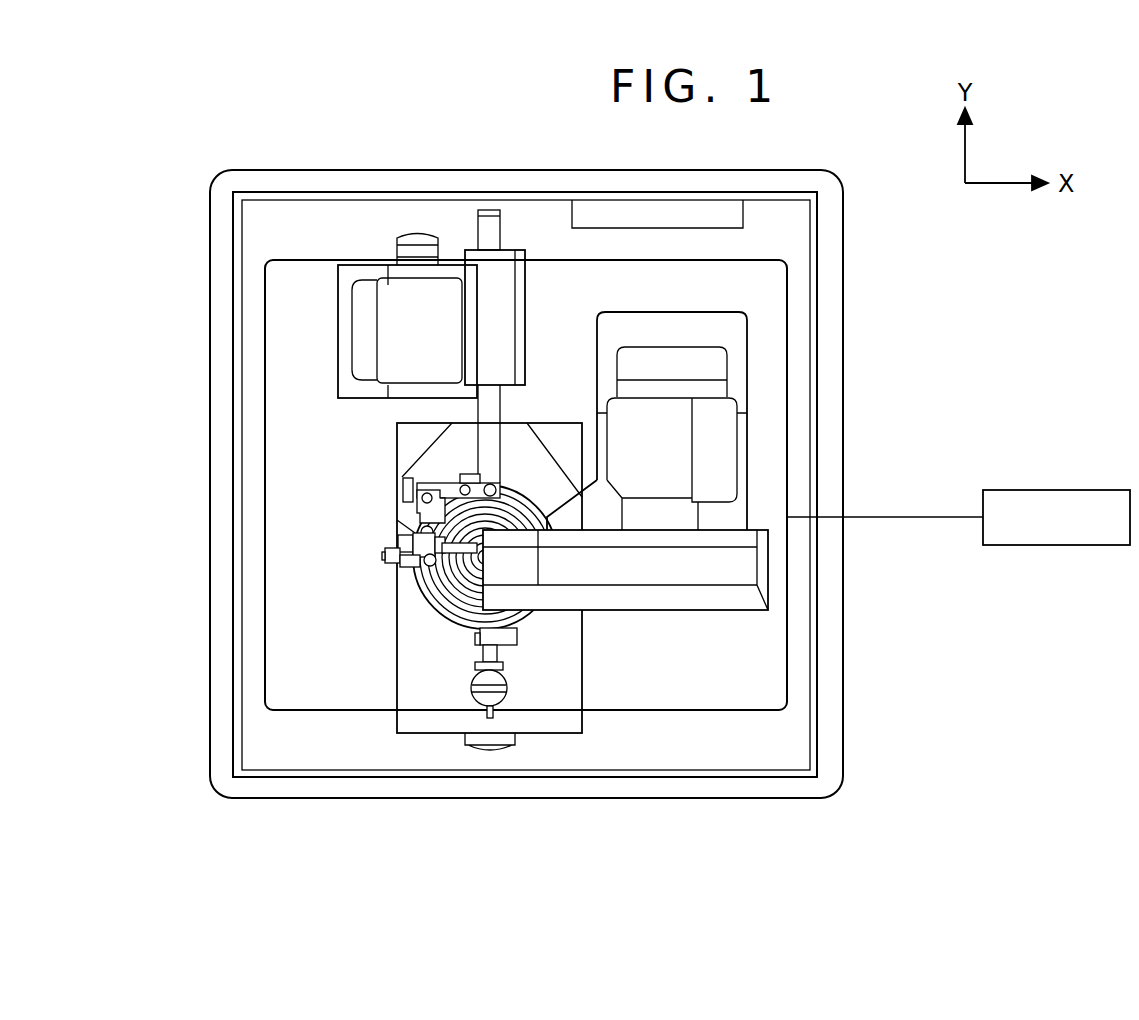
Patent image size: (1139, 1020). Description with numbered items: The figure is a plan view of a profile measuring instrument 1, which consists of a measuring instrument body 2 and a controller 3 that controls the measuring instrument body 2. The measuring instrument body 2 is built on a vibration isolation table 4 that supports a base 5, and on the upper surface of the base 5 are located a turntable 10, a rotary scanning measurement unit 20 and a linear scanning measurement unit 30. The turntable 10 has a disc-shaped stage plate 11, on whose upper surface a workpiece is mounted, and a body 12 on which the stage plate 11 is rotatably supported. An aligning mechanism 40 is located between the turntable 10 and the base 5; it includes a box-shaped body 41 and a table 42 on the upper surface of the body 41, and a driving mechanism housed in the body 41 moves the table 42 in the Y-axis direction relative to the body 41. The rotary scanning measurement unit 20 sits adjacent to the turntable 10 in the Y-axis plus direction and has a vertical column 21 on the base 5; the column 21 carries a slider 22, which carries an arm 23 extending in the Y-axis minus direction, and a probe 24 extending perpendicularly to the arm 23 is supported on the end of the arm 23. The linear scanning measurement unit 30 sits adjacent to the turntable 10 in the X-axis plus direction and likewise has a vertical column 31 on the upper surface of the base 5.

The profile measuring instrument 1 is at (1006, 277).
The measuring instrument body 2 is at (853, 278).
The controller 3 is at (1077, 490).
The vibration isolation table 4 is at (843, 333).
The base 5 is at (788, 410).
The turntable 10 is at (359, 670).
The stage plate 11 is at (432, 607).
The body 12 is at (450, 600).
The rotary scanning measurement unit 20 is at (329, 300).
The column 21 is at (352, 367).
The slider 22 is at (503, 250).
The arm 23 is at (476, 410).
The probe 24 is at (410, 597).
The linear scanning measurement unit 30 is at (749, 616).
The column 31 is at (698, 612).
The aligning mechanism 40 is at (566, 744).
The body 41 is at (587, 675).
The table 42 is at (548, 683).